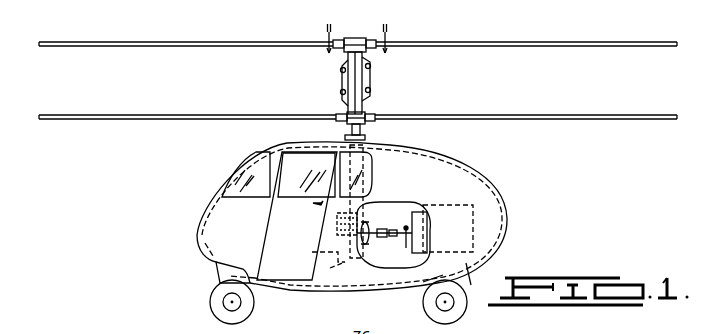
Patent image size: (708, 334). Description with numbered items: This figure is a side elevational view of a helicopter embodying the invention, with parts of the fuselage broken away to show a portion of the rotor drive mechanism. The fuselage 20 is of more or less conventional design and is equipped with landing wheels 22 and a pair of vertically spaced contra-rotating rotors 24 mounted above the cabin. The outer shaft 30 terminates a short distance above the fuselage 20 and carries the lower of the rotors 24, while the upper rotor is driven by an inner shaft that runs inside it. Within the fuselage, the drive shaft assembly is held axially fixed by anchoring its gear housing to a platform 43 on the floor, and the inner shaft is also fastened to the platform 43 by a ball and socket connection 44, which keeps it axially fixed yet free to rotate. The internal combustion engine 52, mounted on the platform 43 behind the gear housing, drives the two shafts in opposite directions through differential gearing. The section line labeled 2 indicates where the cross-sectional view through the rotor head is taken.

The fuselage 20 is at (498, 213).
The landing wheels 22 is at (249, 305).
The contra-rotating rotors 24 is at (241, 38).
The section line 2- 2 is at (350, 53).
The outer shaft 30 is at (369, 138).
The platform 43 is at (385, 266).
The ball and socket connection 44 is at (338, 252).
The internal combustion engine 52 is at (420, 214).